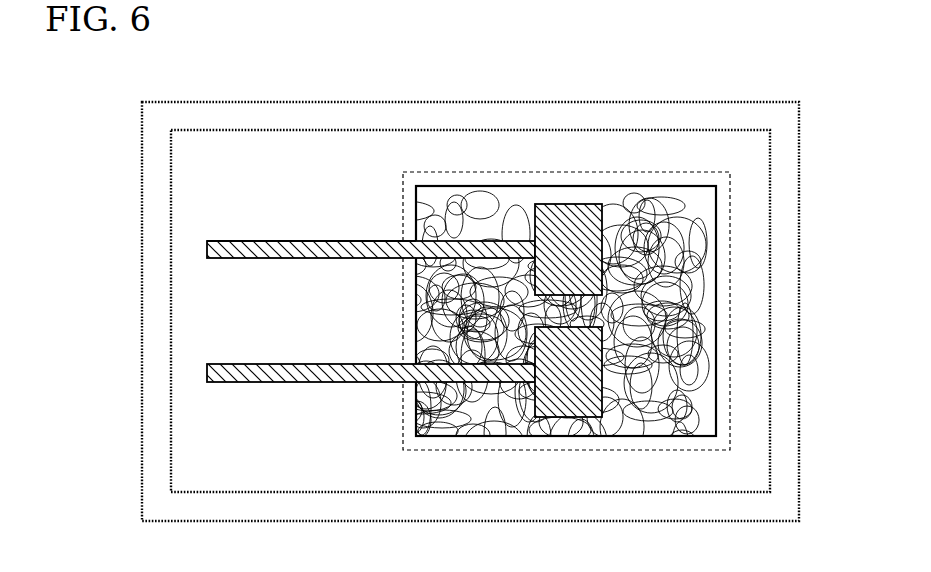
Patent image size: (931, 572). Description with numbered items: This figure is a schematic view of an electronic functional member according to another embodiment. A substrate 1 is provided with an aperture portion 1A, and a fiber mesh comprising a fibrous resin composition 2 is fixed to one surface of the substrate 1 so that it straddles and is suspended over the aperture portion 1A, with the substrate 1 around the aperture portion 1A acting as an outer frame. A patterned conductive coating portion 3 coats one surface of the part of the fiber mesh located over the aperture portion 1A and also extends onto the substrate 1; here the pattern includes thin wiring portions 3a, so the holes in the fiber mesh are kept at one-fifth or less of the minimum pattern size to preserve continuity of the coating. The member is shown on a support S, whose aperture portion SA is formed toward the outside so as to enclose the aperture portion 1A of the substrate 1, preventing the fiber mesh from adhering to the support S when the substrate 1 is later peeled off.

The substrate 1 is at (542, 130).
The aperture portion 1A is at (473, 186).
The fibrous resin composition 2 is at (717, 189).
The conductive coating portion 3 is at (290, 225).
The thin wiring portions 3a is at (358, 241).
The support S is at (727, 102).
The aperture portion SA is at (653, 171).